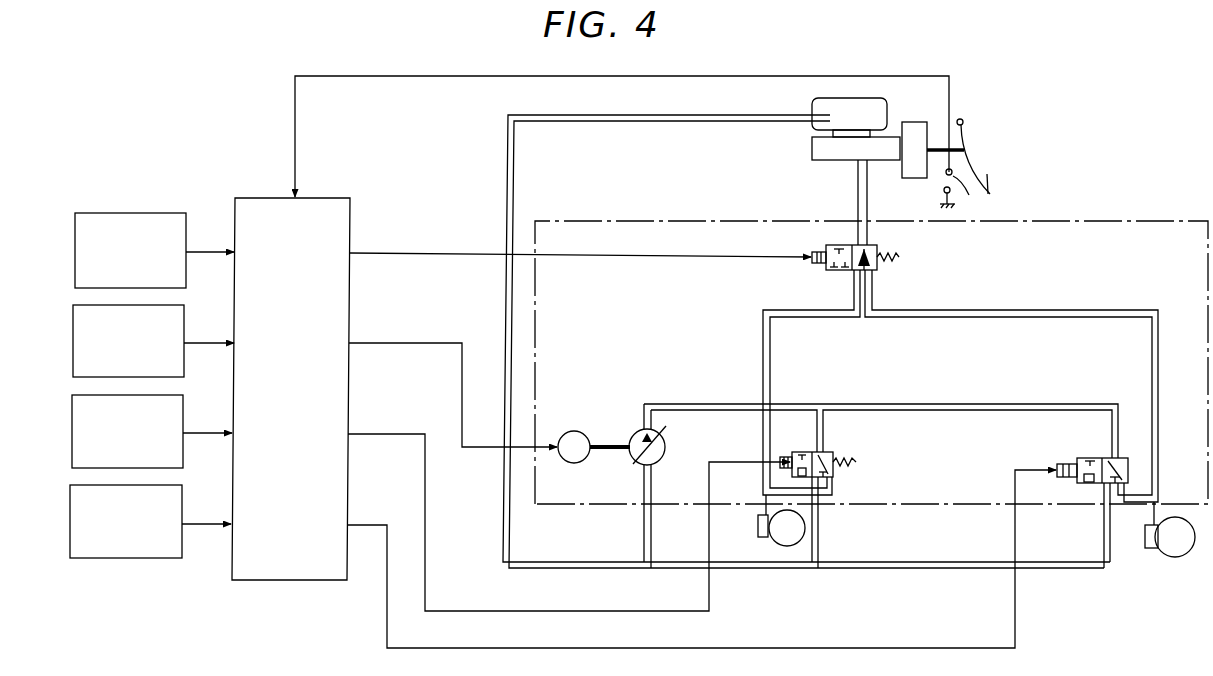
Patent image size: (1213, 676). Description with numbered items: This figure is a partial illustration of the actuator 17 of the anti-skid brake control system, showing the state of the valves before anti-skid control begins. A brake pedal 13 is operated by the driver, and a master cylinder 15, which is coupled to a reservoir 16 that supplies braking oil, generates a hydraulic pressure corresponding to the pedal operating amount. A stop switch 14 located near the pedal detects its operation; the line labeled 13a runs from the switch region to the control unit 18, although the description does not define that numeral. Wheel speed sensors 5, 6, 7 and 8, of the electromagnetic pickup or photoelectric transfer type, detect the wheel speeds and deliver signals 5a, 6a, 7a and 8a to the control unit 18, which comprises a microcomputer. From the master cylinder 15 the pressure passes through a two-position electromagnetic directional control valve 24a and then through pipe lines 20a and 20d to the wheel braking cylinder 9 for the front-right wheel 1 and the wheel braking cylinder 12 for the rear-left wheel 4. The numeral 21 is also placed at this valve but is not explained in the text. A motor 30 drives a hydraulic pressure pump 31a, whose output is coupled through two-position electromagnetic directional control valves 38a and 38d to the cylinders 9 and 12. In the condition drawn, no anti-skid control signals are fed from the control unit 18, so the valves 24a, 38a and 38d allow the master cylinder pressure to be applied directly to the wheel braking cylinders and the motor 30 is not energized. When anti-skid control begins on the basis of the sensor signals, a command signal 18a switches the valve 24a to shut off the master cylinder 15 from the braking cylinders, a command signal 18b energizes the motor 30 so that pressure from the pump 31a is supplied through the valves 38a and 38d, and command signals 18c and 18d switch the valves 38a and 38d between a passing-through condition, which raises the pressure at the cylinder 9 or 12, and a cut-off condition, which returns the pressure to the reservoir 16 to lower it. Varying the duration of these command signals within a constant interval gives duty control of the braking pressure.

The front-right wheel 1 is at (790, 546).
The rear-left wheel 4 is at (1176, 556).
The wheel speed sensor 5 is at (186, 216).
The wheel speed signal 5a is at (192, 251).
The wheel speed sensor 6 is at (184, 308).
The wheel speed signal 6a is at (191, 342).
The wheel speed sensor 7 is at (183, 398).
The wheel speed signal 7a is at (190, 432).
The wheel speed sensor 8 is at (182, 488).
The wheel speed signal 8a is at (189, 523).
The wheel braking cylinder 9 is at (757, 527).
The wheel braking cylinder 12 is at (1152, 549).
The brake pedal 13 is at (990, 185).
The brake switch signal 13a is at (296, 151).
The stop switch 14 is at (958, 196).
The master cylinder 15 is at (883, 161).
The reservoir 16 is at (891, 112).
The actuator 17 is at (1114, 222).
The control unit 18 is at (350, 200).
The command signal 18a is at (365, 252).
The command signal 18b is at (365, 342).
The command signal 18c is at (365, 433).
The command signal 18d is at (364, 524).
The pipe line 20a is at (762, 348).
The pipe line 20d is at (1151, 362).
The changeover valve 21 is at (867, 236).
The two-position electromagnetic directional control valve 24a is at (903, 258).
The motor 30 is at (578, 431).
The hydraulic pressure pump 31a is at (666, 447).
The two-position electromagnetic directional control valve 38a is at (858, 463).
The two-position electromagnetic directional control valve 38d is at (1078, 458).